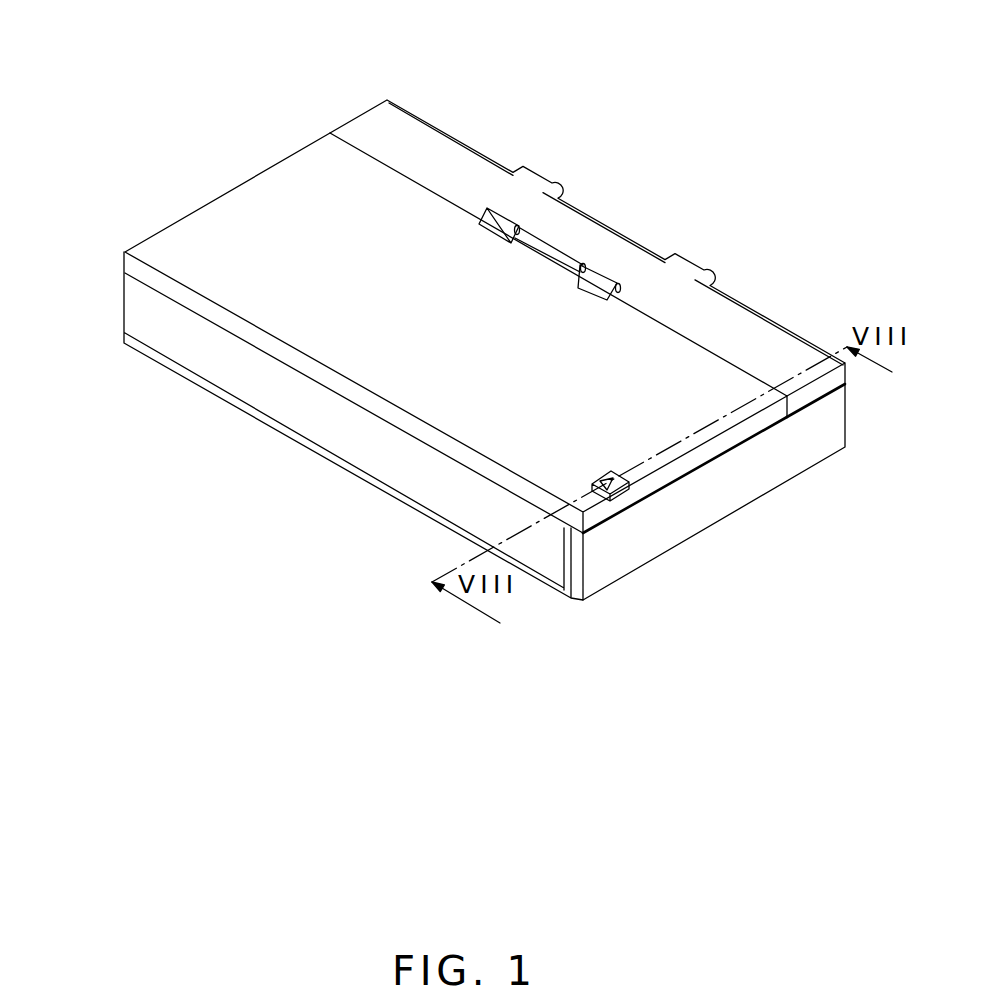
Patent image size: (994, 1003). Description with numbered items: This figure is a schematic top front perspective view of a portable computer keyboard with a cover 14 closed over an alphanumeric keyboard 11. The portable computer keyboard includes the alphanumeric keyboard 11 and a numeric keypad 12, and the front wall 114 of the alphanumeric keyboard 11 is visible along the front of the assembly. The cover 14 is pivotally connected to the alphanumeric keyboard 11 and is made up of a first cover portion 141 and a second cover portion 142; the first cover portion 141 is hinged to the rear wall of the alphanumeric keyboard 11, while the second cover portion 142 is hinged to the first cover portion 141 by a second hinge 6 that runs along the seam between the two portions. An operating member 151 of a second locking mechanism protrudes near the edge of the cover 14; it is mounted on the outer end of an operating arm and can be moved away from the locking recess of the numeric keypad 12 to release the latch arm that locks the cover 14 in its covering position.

The cover 14 is at (485, 271).
The first cover portion 141 is at (372, 120).
The second cover portion 142 is at (308, 160).
The second hinge 6 is at (553, 250).
The alphanumeric keyboard 11 is at (441, 426).
The front wall 114 is at (400, 467).
The numeric keypad 12 is at (722, 480).
The operating member 151 is at (625, 484).